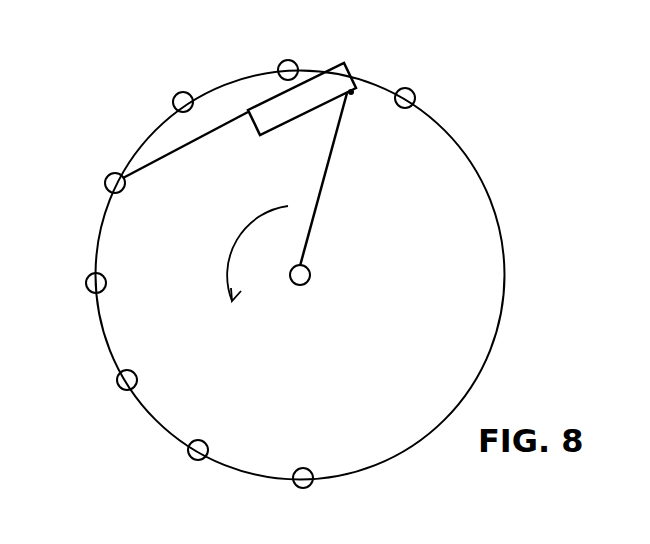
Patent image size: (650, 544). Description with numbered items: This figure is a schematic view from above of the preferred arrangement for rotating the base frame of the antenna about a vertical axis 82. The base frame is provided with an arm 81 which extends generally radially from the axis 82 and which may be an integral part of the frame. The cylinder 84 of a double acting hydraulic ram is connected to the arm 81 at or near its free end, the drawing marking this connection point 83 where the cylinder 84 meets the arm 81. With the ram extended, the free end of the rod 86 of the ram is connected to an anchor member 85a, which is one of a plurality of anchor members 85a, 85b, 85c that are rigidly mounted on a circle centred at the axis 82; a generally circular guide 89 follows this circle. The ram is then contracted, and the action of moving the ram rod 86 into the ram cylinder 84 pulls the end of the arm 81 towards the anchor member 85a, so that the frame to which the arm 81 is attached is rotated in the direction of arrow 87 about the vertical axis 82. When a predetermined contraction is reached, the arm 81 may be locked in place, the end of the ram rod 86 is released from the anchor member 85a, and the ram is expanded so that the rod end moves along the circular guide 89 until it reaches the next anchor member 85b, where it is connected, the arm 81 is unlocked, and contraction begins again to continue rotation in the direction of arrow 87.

The arm 81 is at (320, 200).
The vertical axis 82 is at (310, 283).
The pivot joint of slider and arm 83 is at (352, 95).
The cylinder 84 is at (283, 107).
The anchor member 85a is at (105, 181).
The anchor member 85b is at (86, 283).
The anchor member 85c is at (120, 386).
The rod 86 is at (181, 150).
The arrow 87 is at (257, 273).
The circular guide 89 is at (502, 233).